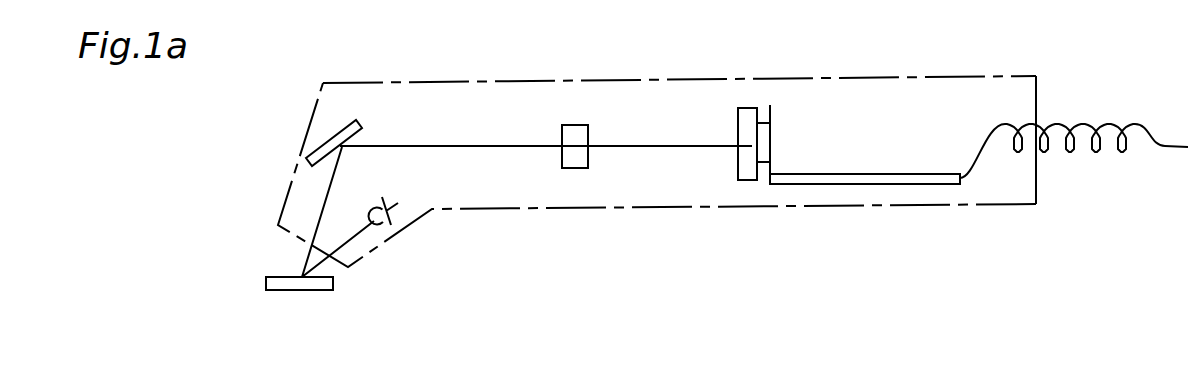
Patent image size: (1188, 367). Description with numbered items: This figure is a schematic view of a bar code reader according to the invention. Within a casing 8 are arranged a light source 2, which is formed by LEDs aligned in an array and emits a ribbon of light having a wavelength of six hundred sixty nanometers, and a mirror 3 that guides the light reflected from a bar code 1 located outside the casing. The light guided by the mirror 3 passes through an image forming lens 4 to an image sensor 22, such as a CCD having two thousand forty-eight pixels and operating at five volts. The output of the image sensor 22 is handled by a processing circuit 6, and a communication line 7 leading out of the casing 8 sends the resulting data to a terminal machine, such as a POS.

The bar code 1 is at (296, 290).
The light source 2 is at (383, 226).
The mirror 3 is at (338, 138).
The image forming lens 4 is at (572, 125).
The image sensor 22 is at (745, 108).
The processing circuit 6 is at (860, 174).
The communication line 7 is at (1087, 123).
The casing 8 is at (1007, 76).